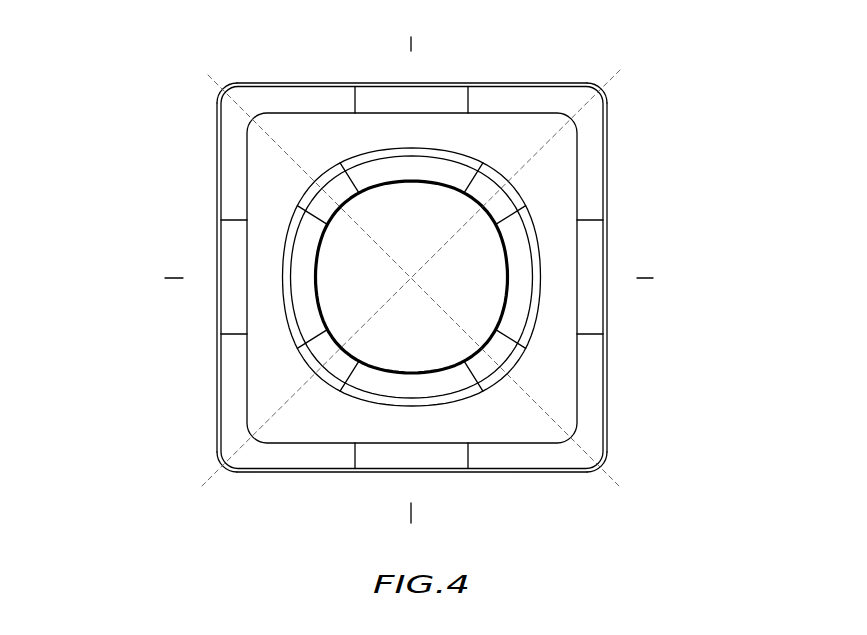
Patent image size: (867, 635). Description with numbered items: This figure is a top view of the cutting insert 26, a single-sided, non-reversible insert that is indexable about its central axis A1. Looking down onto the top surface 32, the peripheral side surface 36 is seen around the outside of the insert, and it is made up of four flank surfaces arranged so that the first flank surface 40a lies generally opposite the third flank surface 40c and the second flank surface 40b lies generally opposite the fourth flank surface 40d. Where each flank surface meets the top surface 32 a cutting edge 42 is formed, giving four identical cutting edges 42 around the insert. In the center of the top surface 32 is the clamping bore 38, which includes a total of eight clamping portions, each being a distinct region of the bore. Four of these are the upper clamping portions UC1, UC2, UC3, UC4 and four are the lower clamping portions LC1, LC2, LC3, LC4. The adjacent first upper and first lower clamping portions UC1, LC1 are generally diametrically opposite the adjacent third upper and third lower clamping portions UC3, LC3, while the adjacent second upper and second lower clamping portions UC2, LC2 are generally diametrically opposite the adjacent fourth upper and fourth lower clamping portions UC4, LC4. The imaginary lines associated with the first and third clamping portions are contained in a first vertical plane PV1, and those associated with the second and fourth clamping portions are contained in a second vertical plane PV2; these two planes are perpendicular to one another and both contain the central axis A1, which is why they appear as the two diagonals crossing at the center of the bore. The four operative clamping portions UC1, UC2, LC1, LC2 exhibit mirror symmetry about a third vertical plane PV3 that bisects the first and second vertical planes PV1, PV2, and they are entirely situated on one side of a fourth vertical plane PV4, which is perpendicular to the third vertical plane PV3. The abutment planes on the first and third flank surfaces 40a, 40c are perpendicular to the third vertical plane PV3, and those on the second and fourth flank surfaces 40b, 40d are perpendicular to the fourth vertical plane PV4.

The cutting insert 26 is at (153, 260).
The top surface 32 is at (548, 210).
The peripheral side surface 36 is at (214, 378).
The clamping bore 38 is at (347, 260).
The first flank surface 40a is at (216, 312).
The second flank surface 40b is at (342, 83).
The third flank surface 40c is at (607, 190).
The fourth flank surface 40d is at (495, 475).
The cutting edge 42 is at (383, 83).
The central axis A1 is at (428, 237).
The first lower clamping portion LC1 is at (347, 337).
The second lower clamping portion LC2 is at (353, 214).
The third lower clamping portion LC3 is at (473, 222).
The fourth lower clamping portion LC4 is at (468, 337).
The first upper clamping portion UC1 is at (337, 353).
The second upper clamping portion UC2 is at (342, 204).
The third upper clamping portion UC3 is at (480, 205).
The fourth upper clamping portion UC4 is at (485, 353).
The first vertical plane PV1 is at (633, 500).
The second vertical plane PV2 is at (187, 500).
The third vertical plane PV3 is at (434, 280).
The fourth vertical plane PV4 is at (438, 278).